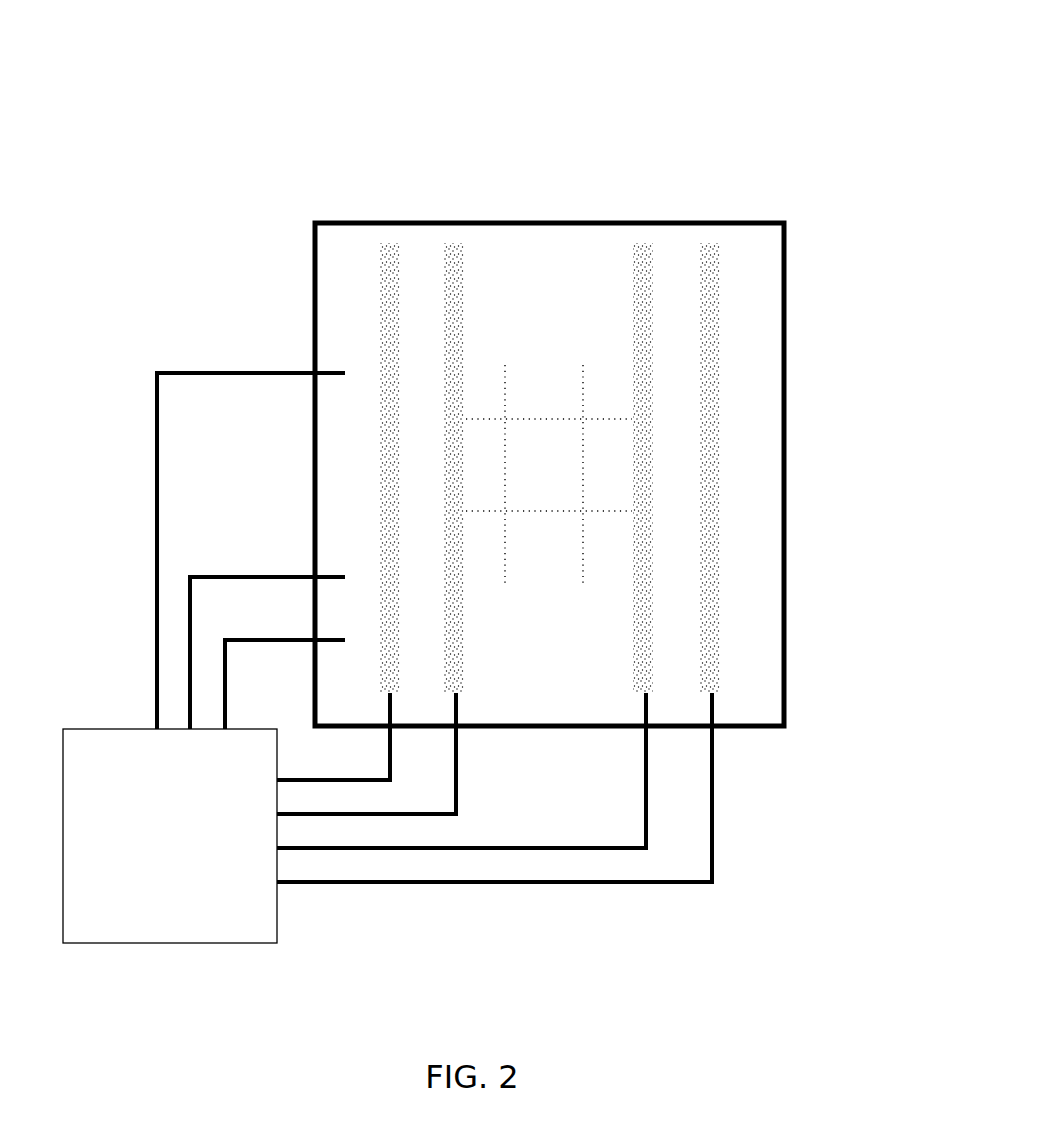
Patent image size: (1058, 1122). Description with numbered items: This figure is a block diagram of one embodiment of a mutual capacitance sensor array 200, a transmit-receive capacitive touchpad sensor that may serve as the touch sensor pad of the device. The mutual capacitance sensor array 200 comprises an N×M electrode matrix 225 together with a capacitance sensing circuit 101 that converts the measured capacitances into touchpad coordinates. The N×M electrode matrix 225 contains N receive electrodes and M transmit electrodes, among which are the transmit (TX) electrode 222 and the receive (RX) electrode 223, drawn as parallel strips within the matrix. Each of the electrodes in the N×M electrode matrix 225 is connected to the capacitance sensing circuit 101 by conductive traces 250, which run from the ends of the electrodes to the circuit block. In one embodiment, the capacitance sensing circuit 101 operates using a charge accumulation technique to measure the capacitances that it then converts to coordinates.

The mutual capacitance sensor array 200 is at (632, 190).
The N×M electrode matrix 225 is at (549, 406).
The transmit electrode 222 is at (342, 361).
The receive electrode 223 is at (710, 233).
The conductive traces 250 is at (670, 885).
The capacitance sensing circuit 101 is at (170, 836).